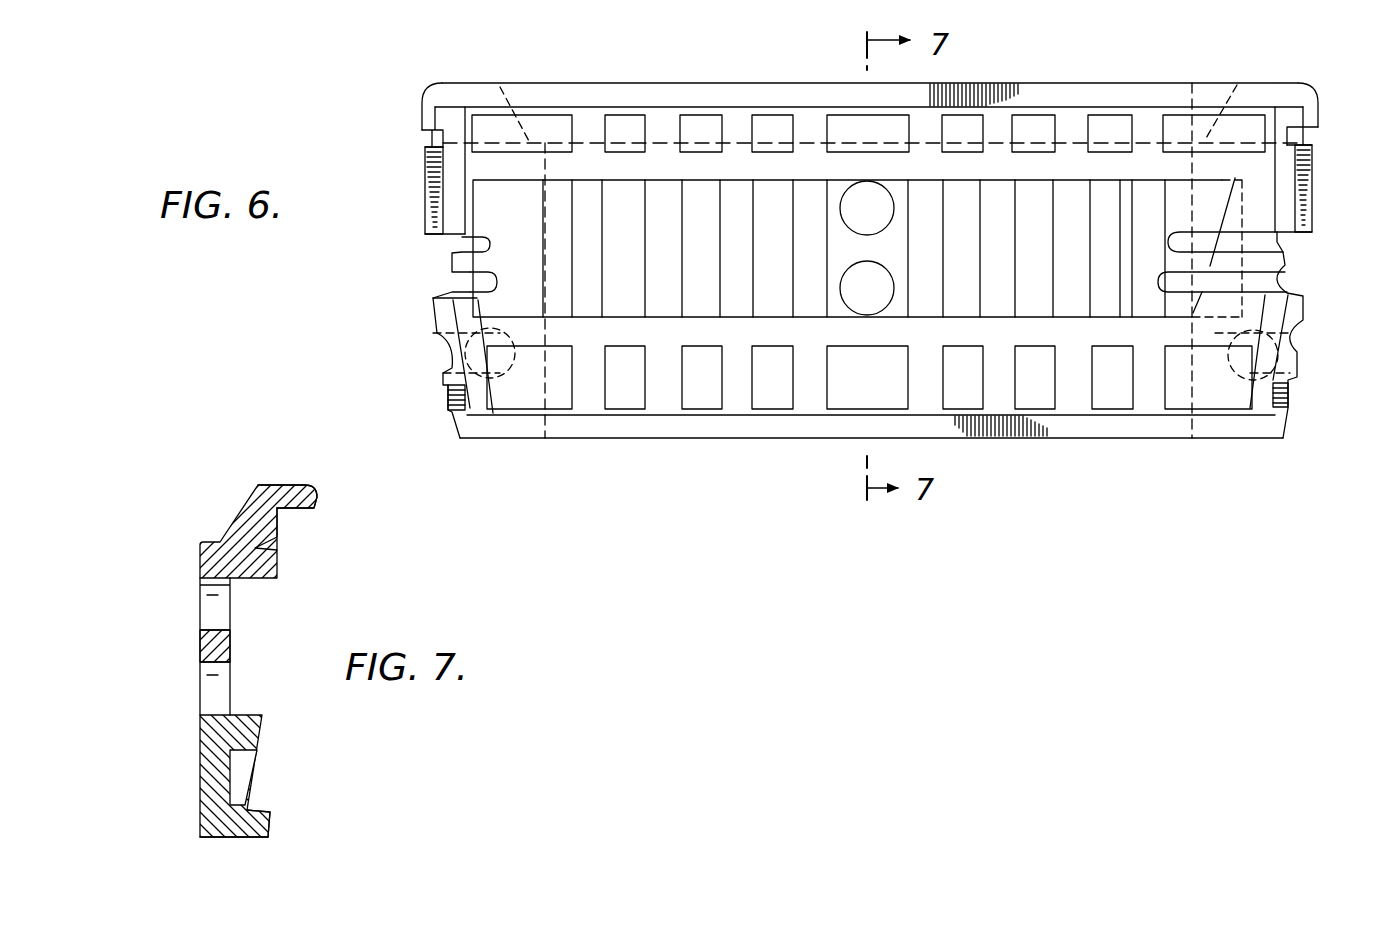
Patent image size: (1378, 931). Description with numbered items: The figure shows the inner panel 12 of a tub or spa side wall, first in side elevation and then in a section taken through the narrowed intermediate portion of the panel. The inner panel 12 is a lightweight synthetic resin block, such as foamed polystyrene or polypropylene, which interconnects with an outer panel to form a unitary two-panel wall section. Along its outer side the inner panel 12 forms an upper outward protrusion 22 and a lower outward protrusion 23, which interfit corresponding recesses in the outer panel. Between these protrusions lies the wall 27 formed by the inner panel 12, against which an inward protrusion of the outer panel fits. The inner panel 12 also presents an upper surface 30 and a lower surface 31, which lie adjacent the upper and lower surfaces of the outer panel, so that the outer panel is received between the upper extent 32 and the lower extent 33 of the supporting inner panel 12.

In FIG. 6, the inner panel 12 is at (1262, 60).
In FIG. 7, the inner panel 12 is at (284, 770).
In FIG. 6, the upper outward protrusion 22 is at (619, 165).
In FIG. 7, the upper outward protrusion 22 is at (270, 565).
In FIG. 6, the lower outward protrusion 23 is at (628, 332).
In FIG. 7, the lower outward protrusion 23 is at (248, 728).
In FIG. 6, the wall 27 is at (492, 217).
In FIG. 7, the wall 27 is at (230, 640).
In FIG. 6, the upper surface 30 is at (733, 112).
In FIG. 7, the upper surface 30 is at (303, 510).
In FIG. 6, the lower surface 31 is at (737, 412).
In FIG. 7, the lower surface 31 is at (262, 808).
In FIG. 6, the upper extent 32 is at (1046, 85).
In FIG. 7, the upper extent 32 is at (287, 488).
In FIG. 6, the lower extent 33 is at (1093, 428).
In FIG. 7, the lower extent 33 is at (255, 830).